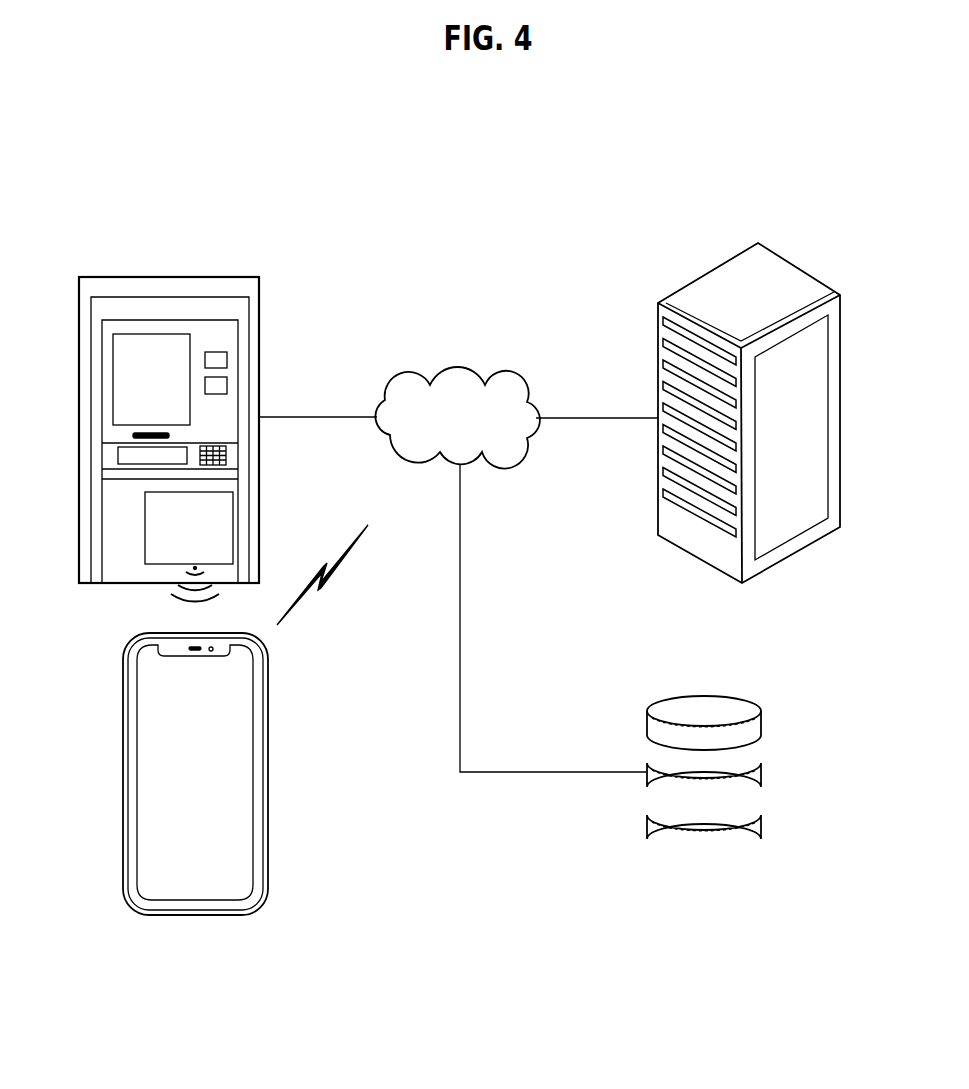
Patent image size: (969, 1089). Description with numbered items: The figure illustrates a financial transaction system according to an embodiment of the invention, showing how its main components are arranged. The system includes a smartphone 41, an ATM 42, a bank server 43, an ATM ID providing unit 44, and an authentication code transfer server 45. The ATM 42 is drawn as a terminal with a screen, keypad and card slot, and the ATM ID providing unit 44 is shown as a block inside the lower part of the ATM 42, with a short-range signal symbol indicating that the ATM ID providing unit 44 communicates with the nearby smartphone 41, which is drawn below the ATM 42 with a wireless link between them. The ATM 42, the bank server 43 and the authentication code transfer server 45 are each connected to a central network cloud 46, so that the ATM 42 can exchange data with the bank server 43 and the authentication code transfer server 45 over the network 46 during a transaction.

The smartphone 41 is at (123, 767).
The ATM 42 is at (167, 277).
The bank server 43 is at (790, 262).
The ATM ID providing unit 44 is at (233, 522).
The authentication code transfer server 45 is at (704, 696).
The network 46 is at (459, 368).